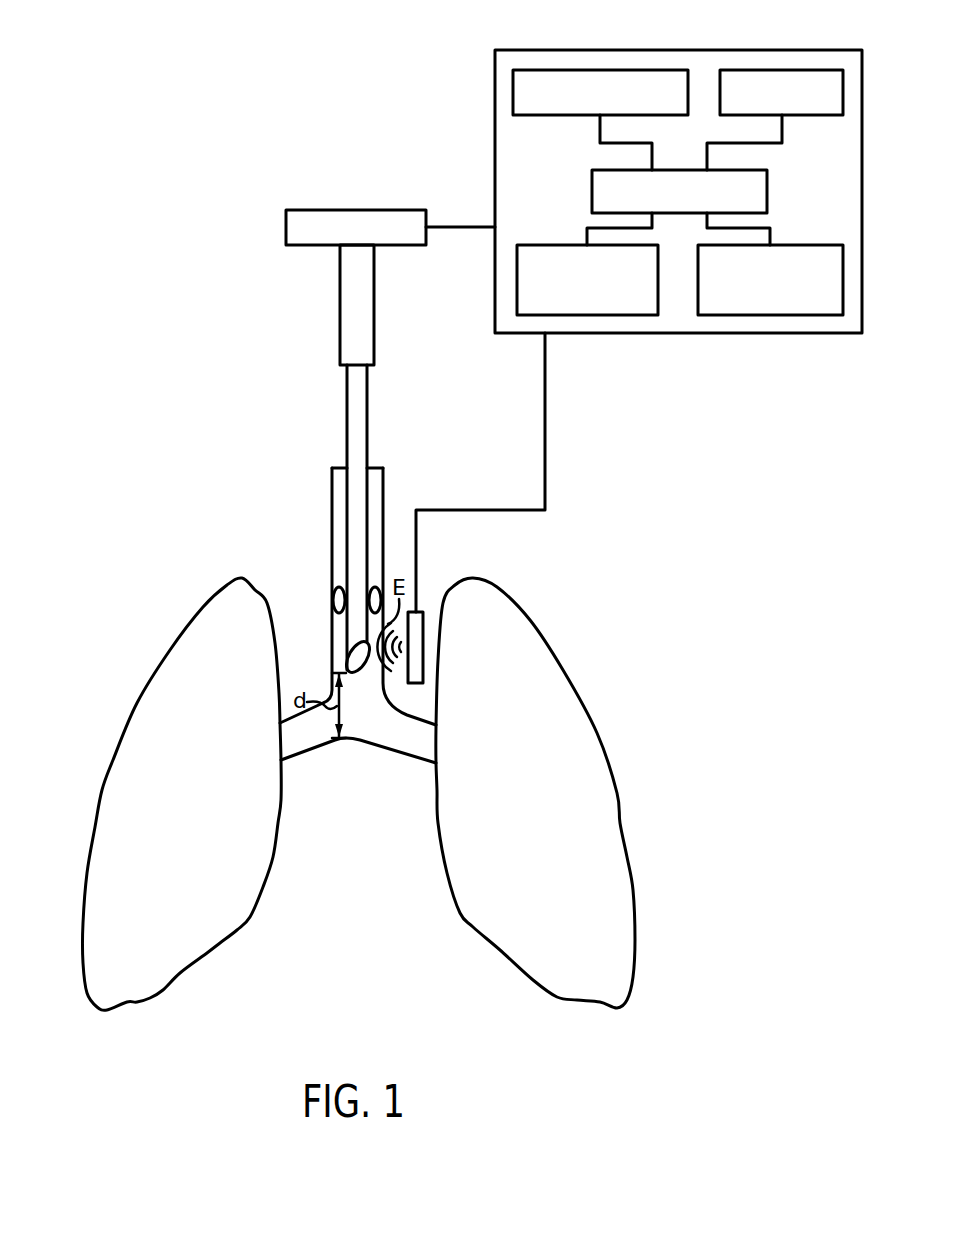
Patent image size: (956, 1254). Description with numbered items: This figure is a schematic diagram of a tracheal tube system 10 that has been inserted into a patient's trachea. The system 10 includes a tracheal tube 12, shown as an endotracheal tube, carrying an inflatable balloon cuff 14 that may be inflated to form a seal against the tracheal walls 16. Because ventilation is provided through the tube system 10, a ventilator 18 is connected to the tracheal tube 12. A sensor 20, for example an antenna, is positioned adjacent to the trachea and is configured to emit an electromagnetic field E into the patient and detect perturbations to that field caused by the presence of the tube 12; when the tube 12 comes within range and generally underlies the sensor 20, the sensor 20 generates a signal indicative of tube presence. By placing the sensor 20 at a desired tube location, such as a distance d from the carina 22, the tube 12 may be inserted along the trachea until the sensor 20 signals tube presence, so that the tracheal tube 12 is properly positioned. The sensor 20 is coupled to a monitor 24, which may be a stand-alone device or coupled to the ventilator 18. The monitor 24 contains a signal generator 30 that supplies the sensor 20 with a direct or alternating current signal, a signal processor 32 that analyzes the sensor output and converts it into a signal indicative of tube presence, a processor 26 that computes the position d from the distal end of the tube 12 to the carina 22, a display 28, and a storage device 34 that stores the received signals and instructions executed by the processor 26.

The tracheal tube system 10 is at (201, 94).
The tracheal tube 12 is at (347, 418).
The inflatable balloon cuff 14 is at (333, 594).
The tracheal walls 16 is at (385, 483).
The ventilator 18 is at (355, 210).
The sensor 20 is at (425, 625).
The carina 22 is at (358, 765).
The monitor 24 is at (680, 50).
The processor 26 is at (767, 200).
The display 28 is at (802, 116).
The signal generator 30 is at (698, 292).
The signal processor 32 is at (550, 243).
The storage device 34 is at (548, 116).